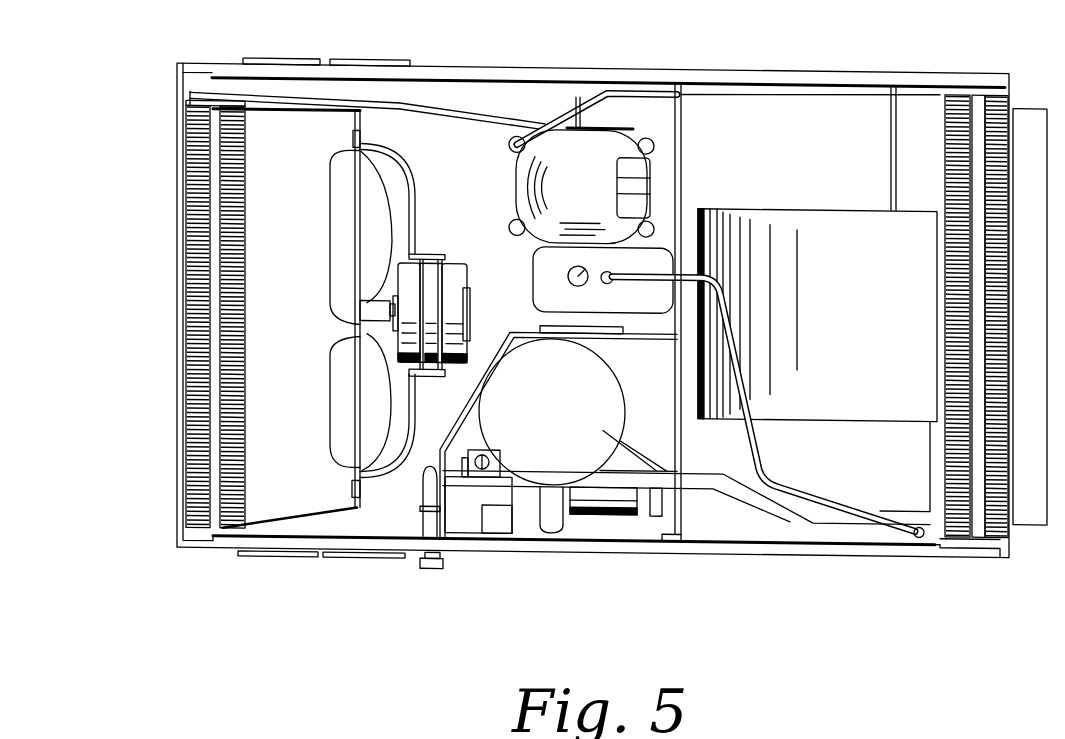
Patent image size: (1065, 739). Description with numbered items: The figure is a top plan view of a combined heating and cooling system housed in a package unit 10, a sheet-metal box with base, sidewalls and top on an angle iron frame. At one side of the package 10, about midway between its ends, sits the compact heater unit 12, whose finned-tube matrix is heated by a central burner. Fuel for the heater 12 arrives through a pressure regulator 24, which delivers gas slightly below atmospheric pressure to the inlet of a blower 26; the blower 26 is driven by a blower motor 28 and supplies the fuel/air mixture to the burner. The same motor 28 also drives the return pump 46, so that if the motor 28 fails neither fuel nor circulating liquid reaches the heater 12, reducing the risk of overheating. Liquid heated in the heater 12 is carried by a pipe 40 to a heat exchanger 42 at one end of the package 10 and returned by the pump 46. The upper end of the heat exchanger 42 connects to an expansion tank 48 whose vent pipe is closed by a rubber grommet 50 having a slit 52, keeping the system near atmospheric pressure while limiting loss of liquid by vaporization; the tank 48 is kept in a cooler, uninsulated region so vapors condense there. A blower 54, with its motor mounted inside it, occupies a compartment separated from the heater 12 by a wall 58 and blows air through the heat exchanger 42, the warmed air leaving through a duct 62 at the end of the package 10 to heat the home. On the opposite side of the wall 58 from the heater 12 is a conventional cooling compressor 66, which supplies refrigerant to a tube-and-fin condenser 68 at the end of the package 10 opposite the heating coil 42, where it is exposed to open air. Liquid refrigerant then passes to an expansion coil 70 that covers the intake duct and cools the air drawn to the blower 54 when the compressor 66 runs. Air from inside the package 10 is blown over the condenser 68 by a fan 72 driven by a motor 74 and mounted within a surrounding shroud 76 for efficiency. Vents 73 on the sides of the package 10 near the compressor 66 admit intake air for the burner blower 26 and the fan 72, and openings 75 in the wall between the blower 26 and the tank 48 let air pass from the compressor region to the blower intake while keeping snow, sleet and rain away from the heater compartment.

The package unit 10 is at (898, 76).
The heater unit 12 is at (559, 418).
The pressure regulator 24 is at (487, 527).
The blower 26 is at (547, 527).
The blower motor 28 is at (607, 508).
The pipe 40 is at (707, 478).
The heat exchanger 42 is at (947, 523).
The return pump 46 is at (657, 508).
The expansion tank 48 is at (533, 277).
The rubber grommet 50 is at (575, 266).
The slit 52 is at (584, 271).
The blower 54 is at (874, 315).
The wall 58 is at (681, 159).
The duct 62 is at (1040, 390).
The cooling compressor 66 is at (592, 193).
The condenser 68 is at (222, 525).
The expansion coil 70 is at (998, 80).
The fan 72 is at (330, 218).
The vents 73 is at (368, 57).
The motor 74 is at (452, 266).
The openings 75 is at (548, 321).
The shroud 76 is at (416, 221).